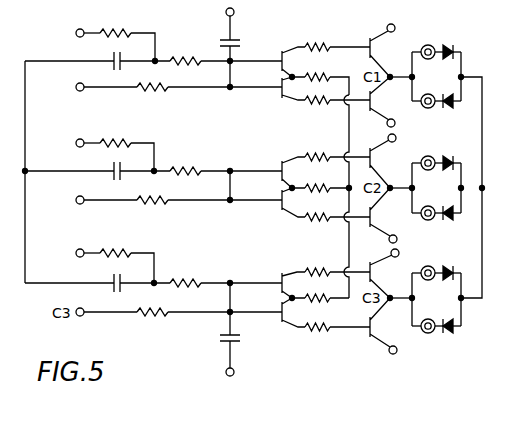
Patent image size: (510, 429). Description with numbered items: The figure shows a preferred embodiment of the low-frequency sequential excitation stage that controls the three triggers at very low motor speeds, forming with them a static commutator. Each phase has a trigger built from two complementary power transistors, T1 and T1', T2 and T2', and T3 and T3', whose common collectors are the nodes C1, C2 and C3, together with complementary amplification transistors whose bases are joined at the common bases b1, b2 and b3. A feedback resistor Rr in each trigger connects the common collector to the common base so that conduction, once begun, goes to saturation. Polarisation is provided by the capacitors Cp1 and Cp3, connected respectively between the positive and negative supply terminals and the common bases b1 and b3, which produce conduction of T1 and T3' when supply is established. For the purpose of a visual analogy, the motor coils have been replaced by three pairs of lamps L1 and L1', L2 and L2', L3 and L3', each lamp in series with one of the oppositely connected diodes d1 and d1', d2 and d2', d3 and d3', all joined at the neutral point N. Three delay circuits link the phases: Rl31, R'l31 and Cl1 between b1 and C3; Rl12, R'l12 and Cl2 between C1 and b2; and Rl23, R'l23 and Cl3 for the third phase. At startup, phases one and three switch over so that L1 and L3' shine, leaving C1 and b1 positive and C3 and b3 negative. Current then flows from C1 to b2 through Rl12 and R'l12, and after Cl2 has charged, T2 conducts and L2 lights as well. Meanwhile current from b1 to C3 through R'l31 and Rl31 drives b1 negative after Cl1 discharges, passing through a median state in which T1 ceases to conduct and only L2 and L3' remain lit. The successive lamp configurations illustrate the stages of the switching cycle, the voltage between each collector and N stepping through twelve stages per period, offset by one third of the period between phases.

The common collector of phase 1 C1 is at (96, 88).
The common collector of phase 2 C2 is at (95, 201).
The common collector of phase 3 C3 is at (77, 34).
The delay resistor Rl31 is at (127, 37).
The delay resistor Rl12 is at (105, 147).
The delay resistor Rl23 is at (104, 258).
The delay resistor R'l31 is at (226, 49).
The delay resistor R'l12 is at (226, 159).
The delay resistor R'l23 is at (226, 271).
The delay capacitor Cl1 is at (97, 69).
The delay capacitor Cl2 is at (97, 179).
The delay capacitor Cl3 is at (97, 291).
The feedback resistor Rr is at (209, 211).
The polarisation capacitor Cp1 is at (247, 33).
The polarisation capacitor Cp3 is at (248, 356).
The common base of phase 1 b1 is at (242, 74).
The common base of phase 2 b2 is at (242, 186).
The common base of phase 3 b3 is at (242, 308).
The power transistor T1 is at (381, 48).
The complementary power transistor T1' is at (378, 104).
The power transistor T2 is at (381, 159).
The complementary power transistor T2' is at (379, 219).
The power transistor T3 is at (383, 271).
The complementary power transistor T3' is at (377, 328).
The lamp L1 is at (427, 45).
The lamp L1' is at (427, 114).
The lamp L2 is at (427, 155).
The lamp L2' is at (427, 228).
The lamp L3 is at (427, 265).
The lamp L3' is at (427, 341).
The diode d1 is at (451, 45).
The diode d1' is at (451, 114).
The diode d2 is at (451, 155).
The diode d2' is at (451, 228).
The diode d3 is at (452, 265).
The diode d3' is at (452, 341).
The neutral point N is at (480, 187).